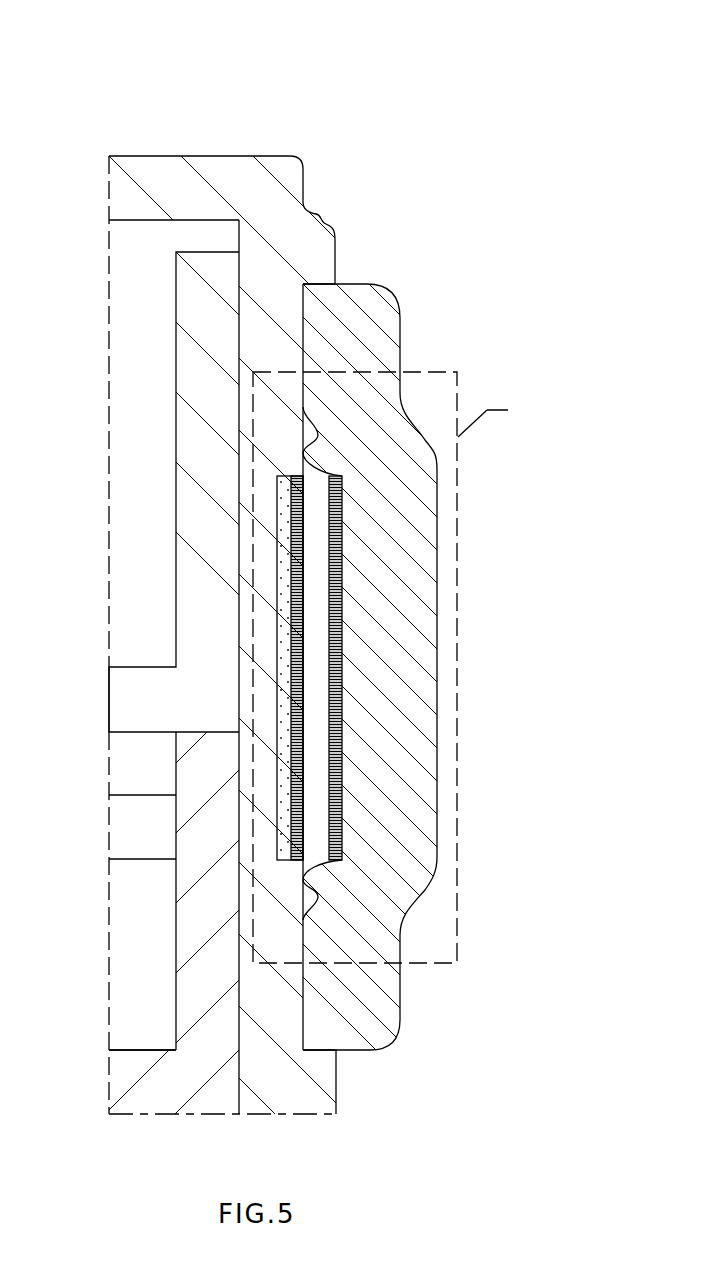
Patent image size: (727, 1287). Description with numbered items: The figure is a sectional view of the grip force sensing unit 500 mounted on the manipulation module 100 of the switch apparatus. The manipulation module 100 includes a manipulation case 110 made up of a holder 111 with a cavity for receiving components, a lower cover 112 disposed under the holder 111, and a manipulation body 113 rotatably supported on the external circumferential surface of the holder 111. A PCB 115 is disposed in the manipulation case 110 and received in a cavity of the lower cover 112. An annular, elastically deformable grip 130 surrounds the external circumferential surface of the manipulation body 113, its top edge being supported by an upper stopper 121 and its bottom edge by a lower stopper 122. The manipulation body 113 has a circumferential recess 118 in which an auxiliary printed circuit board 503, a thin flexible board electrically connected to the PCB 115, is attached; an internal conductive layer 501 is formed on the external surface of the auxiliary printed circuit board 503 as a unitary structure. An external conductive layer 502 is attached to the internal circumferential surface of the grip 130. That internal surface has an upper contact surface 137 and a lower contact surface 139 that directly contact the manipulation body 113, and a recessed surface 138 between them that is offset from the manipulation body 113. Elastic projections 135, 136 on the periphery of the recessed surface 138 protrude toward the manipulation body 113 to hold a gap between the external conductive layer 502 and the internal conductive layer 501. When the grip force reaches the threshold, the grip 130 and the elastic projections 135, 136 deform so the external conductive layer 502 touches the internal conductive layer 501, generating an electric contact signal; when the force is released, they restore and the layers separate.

The manipulation module 100 is at (393, 97).
The manipulation case 110 is at (226, 148).
The holder 111 is at (208, 391).
The lower cover 112 is at (145, 1081).
The manipulation body 113 is at (265, 352).
The PCB 115 is at (145, 824).
The recess 118 is at (283, 540).
The upper stopper 121 is at (316, 247).
The lower stopper 122 is at (316, 1090).
The grip 130 is at (413, 624).
The elastic projection 135 is at (305, 448).
The elastic projection 136 is at (303, 878).
The upper contact surface 137 is at (308, 338).
The recessed surface 138 is at (343, 540).
The lower contact surface 139 is at (308, 1004).
The grip force sensing unit 500 is at (523, 666).
The internal conductive layer 501 is at (296, 706).
The external conductive layer 502 is at (337, 666).
The auxiliary printed circuit board 503 is at (285, 606).